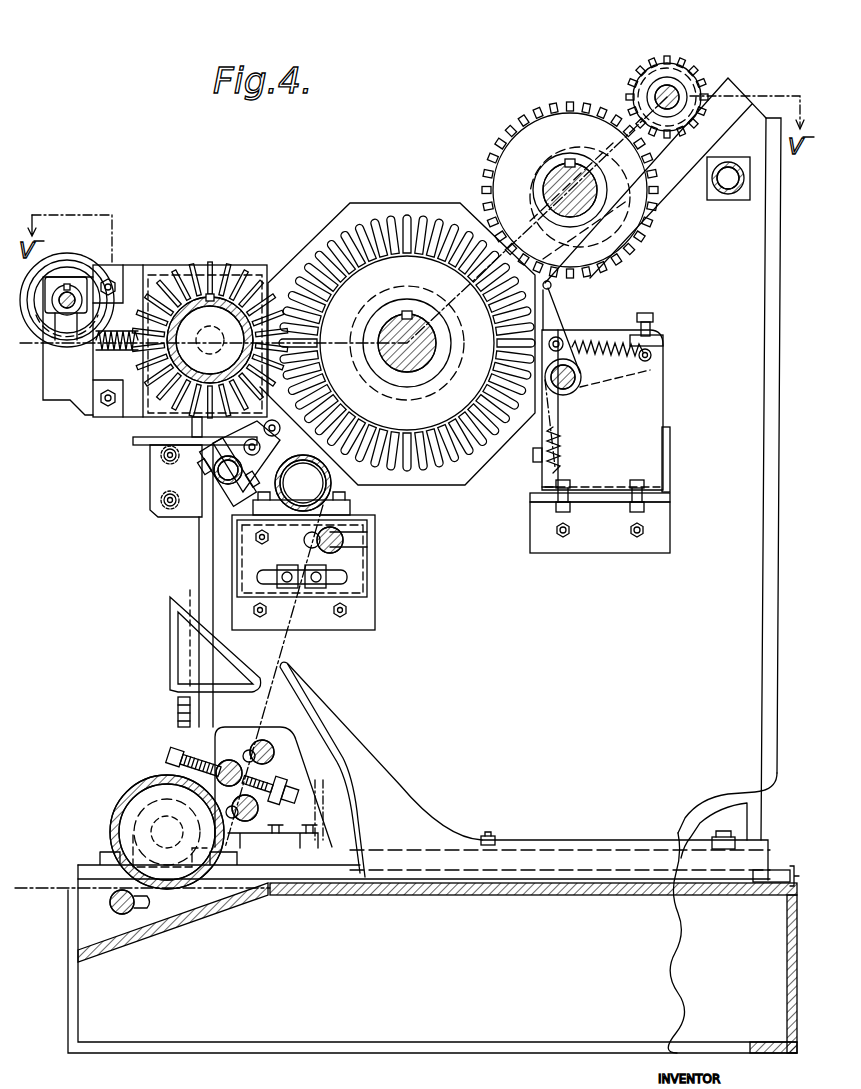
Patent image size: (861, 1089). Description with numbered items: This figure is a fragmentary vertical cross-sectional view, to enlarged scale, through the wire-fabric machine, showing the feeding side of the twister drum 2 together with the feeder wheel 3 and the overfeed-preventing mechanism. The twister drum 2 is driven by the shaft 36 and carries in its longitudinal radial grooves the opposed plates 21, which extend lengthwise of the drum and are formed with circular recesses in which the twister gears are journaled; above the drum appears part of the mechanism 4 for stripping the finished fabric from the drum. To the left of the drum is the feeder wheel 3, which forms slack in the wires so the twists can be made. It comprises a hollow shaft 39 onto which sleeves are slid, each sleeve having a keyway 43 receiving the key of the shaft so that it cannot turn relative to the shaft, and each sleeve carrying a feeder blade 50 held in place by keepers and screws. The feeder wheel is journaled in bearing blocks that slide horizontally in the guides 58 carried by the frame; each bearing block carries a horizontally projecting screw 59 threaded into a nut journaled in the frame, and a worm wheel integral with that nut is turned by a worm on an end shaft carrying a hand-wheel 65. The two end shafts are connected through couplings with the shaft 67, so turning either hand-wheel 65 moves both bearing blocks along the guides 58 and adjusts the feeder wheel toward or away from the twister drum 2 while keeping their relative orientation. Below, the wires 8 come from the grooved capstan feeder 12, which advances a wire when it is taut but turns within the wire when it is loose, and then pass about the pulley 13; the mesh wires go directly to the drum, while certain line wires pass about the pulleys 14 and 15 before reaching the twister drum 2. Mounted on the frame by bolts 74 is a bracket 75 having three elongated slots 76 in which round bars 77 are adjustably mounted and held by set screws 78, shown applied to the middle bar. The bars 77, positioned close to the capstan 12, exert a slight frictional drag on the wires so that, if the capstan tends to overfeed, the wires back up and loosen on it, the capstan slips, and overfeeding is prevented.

The twister drum 2 is at (413, 433).
The feeder wheel 3 is at (248, 278).
The stripping mechanism 4 is at (540, 112).
The wires 8 is at (30, 888).
The capstan feeder 12 is at (110, 820).
The pulley 13 is at (332, 480).
The pulley 14 is at (231, 472).
The pulley 15 is at (260, 456).
The plates 21 is at (402, 222).
The shaft 36 is at (407, 372).
The hollow shaft 39 is at (197, 372).
The keyway 43 is at (216, 284).
The feeder blade 50 is at (192, 272).
The guides 58 is at (132, 272).
The screw 59 is at (108, 350).
The hand-wheel 65 is at (73, 262).
The shaft 67 is at (78, 315).
The bolts 74 is at (533, 902).
The bracket 75 is at (305, 768).
The elongated slots 76 is at (283, 752).
The round bars 77 is at (250, 760).
The set screws 78 is at (193, 760).